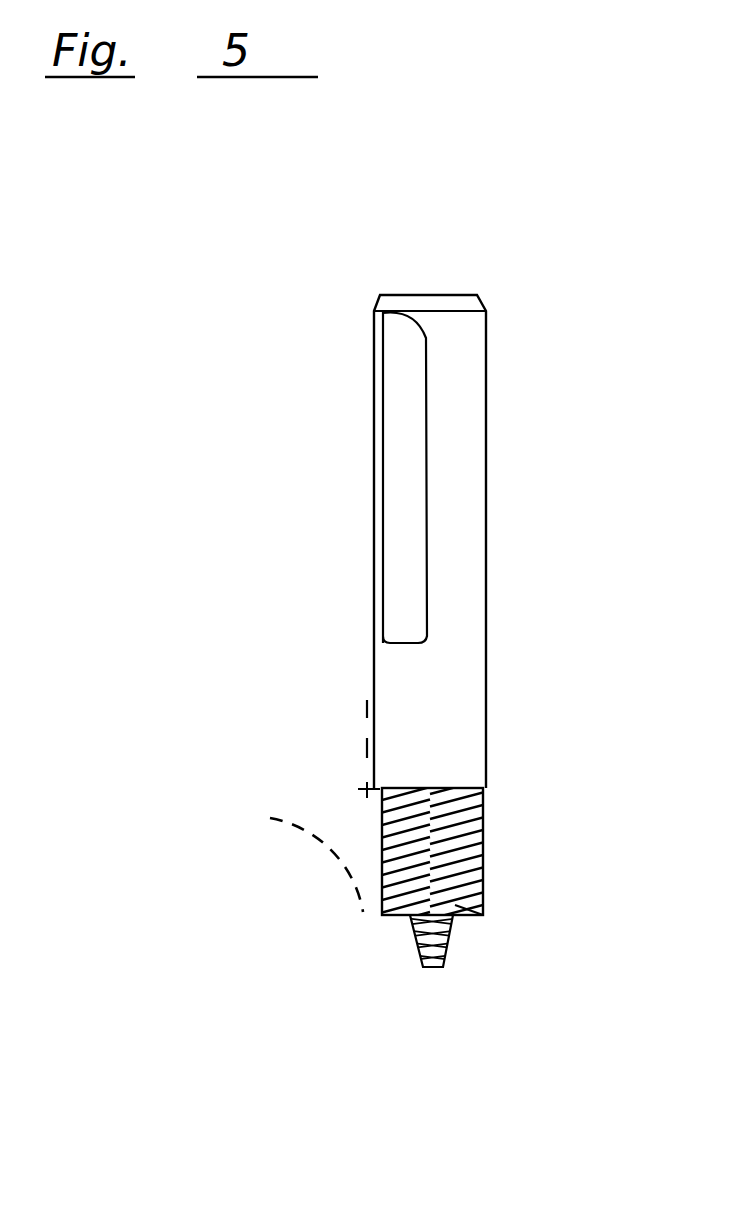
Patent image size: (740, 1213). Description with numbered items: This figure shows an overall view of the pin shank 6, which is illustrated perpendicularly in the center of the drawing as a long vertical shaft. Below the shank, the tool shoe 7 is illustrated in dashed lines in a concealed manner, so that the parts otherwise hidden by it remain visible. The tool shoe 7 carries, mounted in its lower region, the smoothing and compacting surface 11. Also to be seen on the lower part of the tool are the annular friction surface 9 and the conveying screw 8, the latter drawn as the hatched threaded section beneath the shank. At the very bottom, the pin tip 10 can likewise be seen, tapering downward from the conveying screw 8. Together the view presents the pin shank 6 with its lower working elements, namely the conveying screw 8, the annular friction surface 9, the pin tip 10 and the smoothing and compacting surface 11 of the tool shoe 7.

The pin shank 6 is at (465, 356).
The tool shoe 7 is at (316, 790).
The conveying screw 8 is at (470, 827).
The annular friction surface 9 is at (467, 913).
The pin tip 10 is at (419, 947).
The smoothing and compacting surface 11 is at (368, 914).